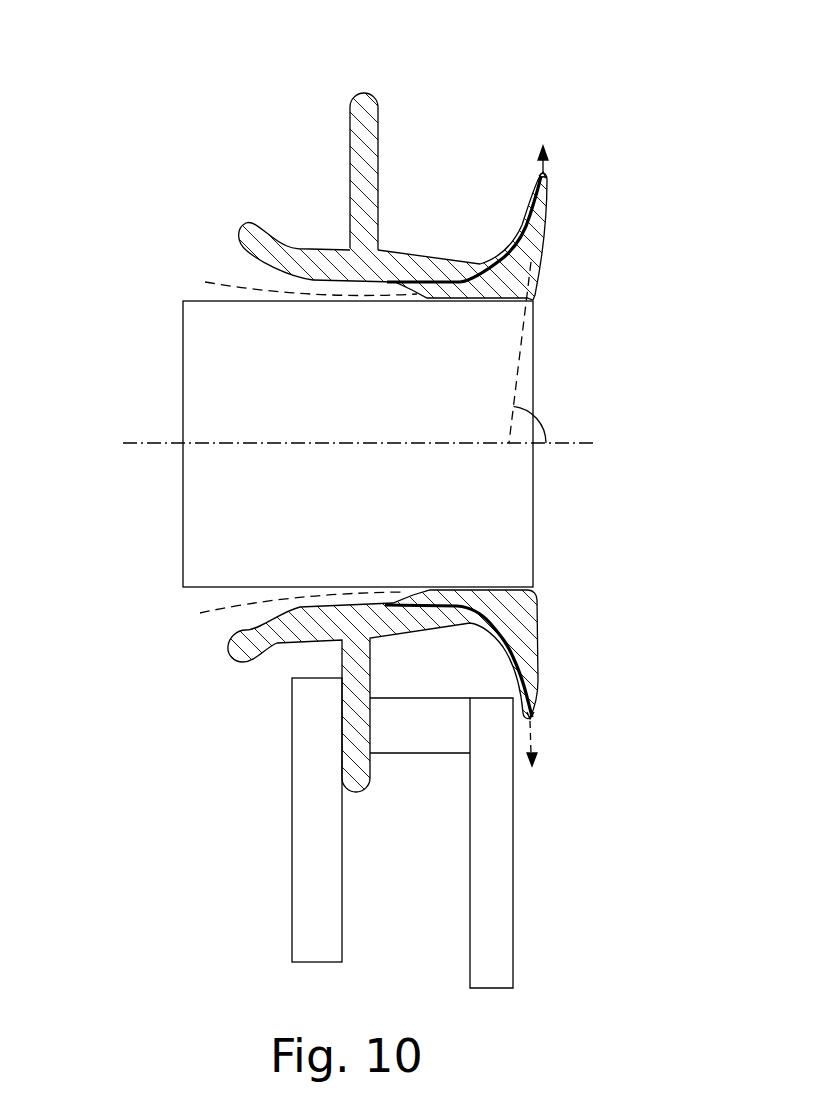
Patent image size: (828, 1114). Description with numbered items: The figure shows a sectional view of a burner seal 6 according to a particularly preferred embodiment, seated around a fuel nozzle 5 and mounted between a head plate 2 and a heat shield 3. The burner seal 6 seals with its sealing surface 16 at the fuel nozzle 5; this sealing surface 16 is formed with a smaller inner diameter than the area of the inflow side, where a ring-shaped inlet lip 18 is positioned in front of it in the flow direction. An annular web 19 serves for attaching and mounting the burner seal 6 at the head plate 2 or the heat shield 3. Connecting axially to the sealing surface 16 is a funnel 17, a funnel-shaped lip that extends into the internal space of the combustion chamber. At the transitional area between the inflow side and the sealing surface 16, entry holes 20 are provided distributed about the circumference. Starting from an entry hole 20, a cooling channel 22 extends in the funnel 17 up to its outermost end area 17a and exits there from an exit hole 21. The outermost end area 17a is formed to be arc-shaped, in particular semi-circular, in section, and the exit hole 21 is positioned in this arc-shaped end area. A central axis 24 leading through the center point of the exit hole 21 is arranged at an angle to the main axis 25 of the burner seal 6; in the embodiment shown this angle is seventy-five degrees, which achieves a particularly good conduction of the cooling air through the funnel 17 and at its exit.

The head plate 2 is at (297, 913).
The heat shield 3 is at (502, 913).
The fuel nozzle 5 is at (195, 468).
The burner seal 6 is at (528, 612).
The sealing surface 16 is at (480, 297).
The funnel 17 is at (548, 210).
The outermost end area 17a is at (549, 178).
The inlet lip 18 is at (252, 240).
The annular web 19 is at (366, 94).
The entry hole 20 is at (415, 288).
The exit hole 21 is at (545, 175).
The cooling channel 22 is at (535, 278).
The central axis 24 is at (540, 160).
The main axis 25 is at (576, 447).